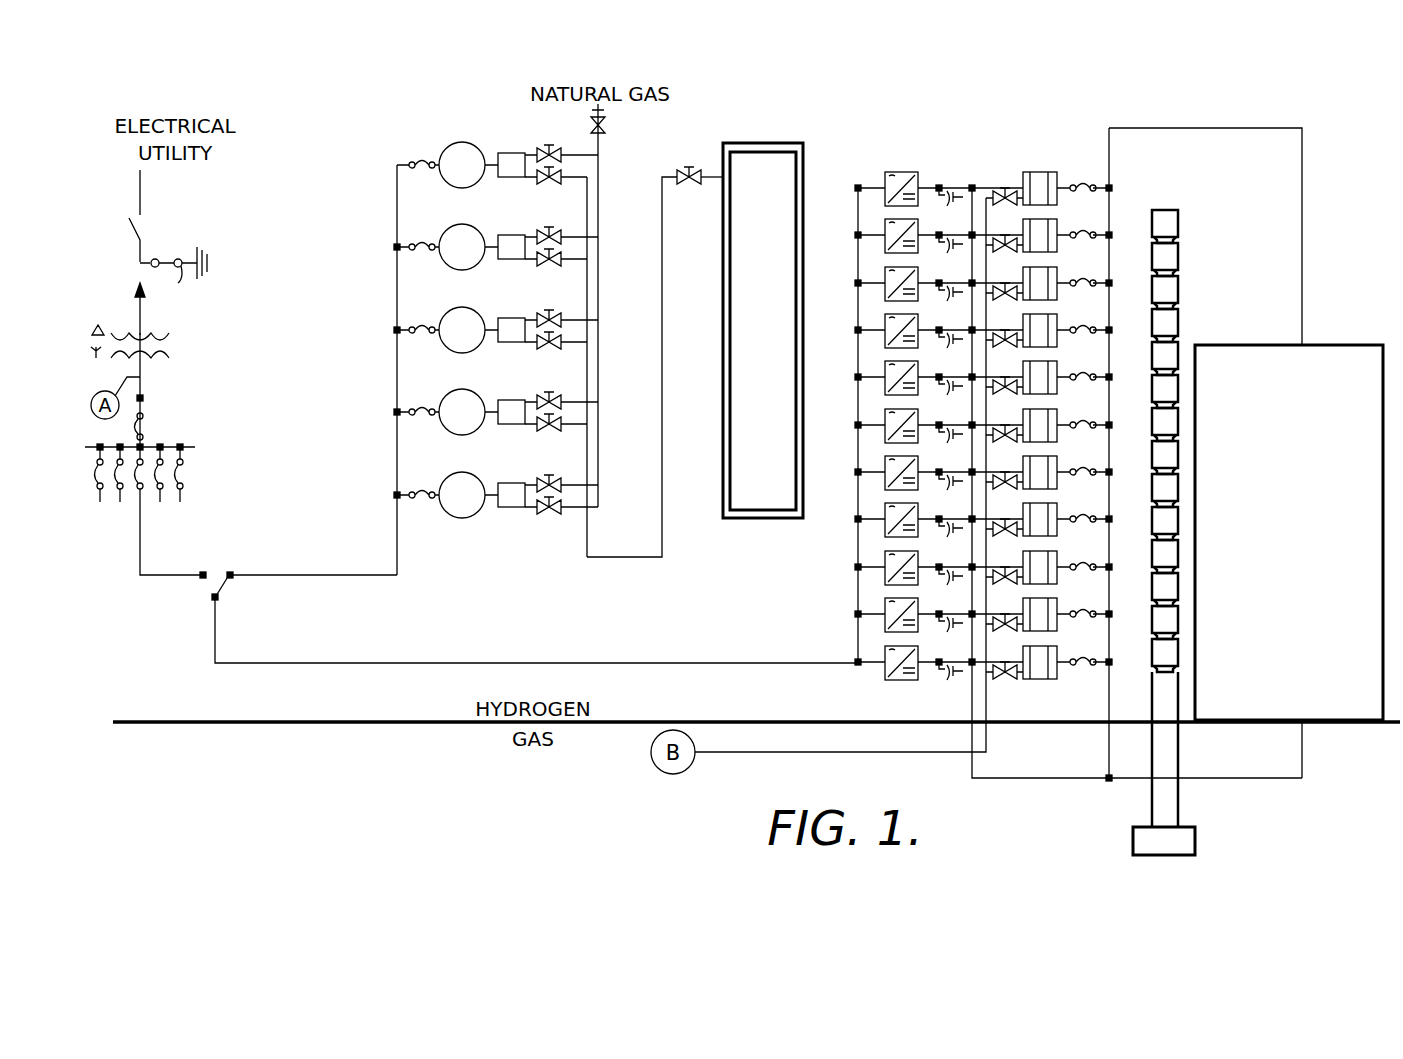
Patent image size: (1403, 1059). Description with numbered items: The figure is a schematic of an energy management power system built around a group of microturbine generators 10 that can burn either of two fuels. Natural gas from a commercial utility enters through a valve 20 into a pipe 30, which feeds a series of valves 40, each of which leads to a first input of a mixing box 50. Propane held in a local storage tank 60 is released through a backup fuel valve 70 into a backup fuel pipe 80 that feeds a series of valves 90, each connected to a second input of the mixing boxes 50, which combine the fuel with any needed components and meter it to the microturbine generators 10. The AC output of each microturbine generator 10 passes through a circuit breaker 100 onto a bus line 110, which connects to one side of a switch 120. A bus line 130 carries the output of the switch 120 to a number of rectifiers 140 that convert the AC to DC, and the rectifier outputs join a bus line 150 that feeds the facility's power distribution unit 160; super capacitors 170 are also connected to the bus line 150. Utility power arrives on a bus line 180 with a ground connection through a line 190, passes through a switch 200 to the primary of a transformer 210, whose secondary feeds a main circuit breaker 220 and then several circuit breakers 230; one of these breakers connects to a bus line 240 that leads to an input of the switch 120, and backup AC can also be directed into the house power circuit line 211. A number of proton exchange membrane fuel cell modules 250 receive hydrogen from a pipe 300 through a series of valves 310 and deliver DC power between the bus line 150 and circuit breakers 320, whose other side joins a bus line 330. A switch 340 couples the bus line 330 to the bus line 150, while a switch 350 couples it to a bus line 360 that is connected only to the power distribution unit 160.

The microturbine generator 10 is at (446, 146).
The valve 20 is at (598, 132).
The pipe 30 is at (591, 205).
The valve 40 is at (549, 475).
The mixing box 50 is at (511, 153).
The local storage tank 60 is at (803, 172).
The backup fuel valve 70 is at (690, 190).
The backup fuel pipe 80 is at (663, 290).
The valve 90 is at (549, 515).
The circuit breaker 100 is at (420, 243).
The bus line 110 is at (397, 368).
The switch 120 is at (222, 574).
The bus line 130 is at (355, 663).
The rectifier 140 is at (888, 165).
The bus line 150 is at (1075, 778).
The power distribution unit 160 is at (1365, 344).
The super capacitor 170 is at (952, 187).
The bus line 180 is at (142, 190).
The line 190 is at (171, 291).
The switch 200 is at (145, 230).
The transformer 210 is at (168, 343).
The house power circuit line 211 is at (142, 368).
The main circuit breaker 220 is at (145, 428).
The circuit breaker 230 is at (185, 475).
The bus line 240 is at (143, 560).
The proton exchange membrane fuel cell module 250 is at (1043, 170).
The pipe 300 is at (795, 753).
The valve 310 is at (1006, 685).
The circuit breaker 320 is at (1081, 676).
The bus line 330 is at (1112, 215).
The switch 340 is at (1103, 688).
The switch 350 is at (1105, 175).
The bus line 360 is at (1290, 130).